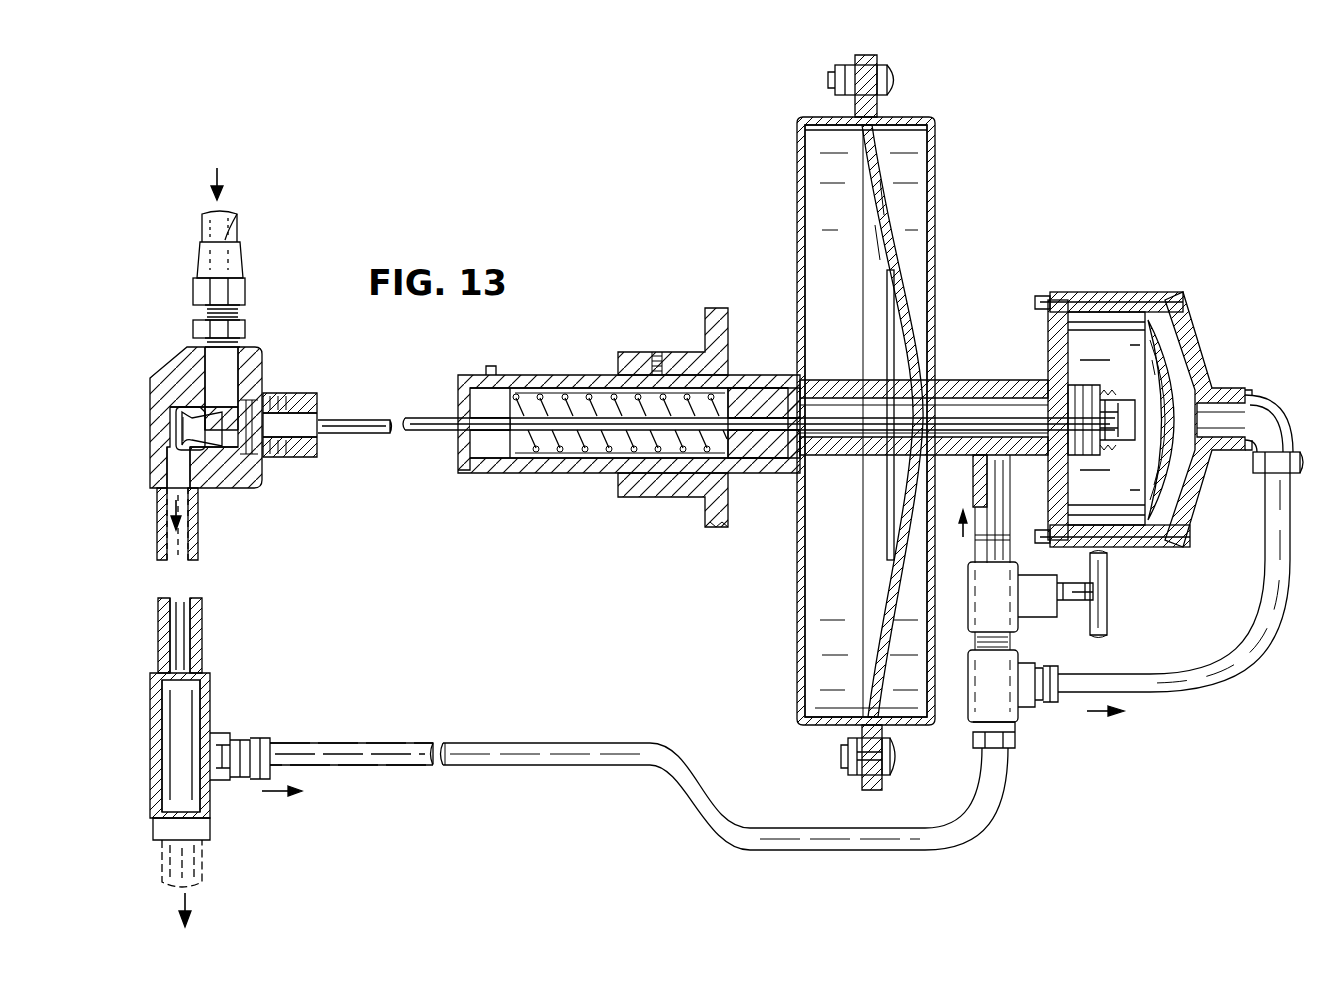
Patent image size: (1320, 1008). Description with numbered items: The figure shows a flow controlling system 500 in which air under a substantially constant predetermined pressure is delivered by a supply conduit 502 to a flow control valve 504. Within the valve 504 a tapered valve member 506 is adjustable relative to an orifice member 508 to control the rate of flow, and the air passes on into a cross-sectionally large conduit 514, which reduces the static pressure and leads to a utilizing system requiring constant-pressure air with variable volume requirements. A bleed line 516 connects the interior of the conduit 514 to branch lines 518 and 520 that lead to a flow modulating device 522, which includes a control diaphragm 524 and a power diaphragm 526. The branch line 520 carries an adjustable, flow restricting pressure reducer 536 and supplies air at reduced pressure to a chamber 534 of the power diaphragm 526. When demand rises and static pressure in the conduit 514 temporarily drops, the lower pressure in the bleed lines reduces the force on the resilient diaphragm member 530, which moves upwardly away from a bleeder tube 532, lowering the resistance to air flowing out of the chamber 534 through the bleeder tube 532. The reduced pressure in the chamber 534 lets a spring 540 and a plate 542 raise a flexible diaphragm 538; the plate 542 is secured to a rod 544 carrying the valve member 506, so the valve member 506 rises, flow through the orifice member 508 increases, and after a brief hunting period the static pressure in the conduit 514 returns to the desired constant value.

The flow controlling system 500 is at (810, 452).
The supply conduit 502 is at (237, 222).
The flow control valve 504 is at (276, 474).
The tapered valve member 506 is at (218, 457).
The orifice member 508 is at (185, 410).
The cross-sectionally large conduit 514 is at (203, 876).
The bleed line 516 is at (415, 768).
The branch line 518 is at (1200, 673).
The branch line 520 is at (1010, 640).
The flow modulating device 522 is at (792, 309).
The control diaphragm 524 is at (1192, 505).
The power diaphragm 526 is at (782, 268).
The resilient diaphragm member 530 is at (1165, 360).
The bleeder tube 532 is at (986, 379).
The chamber 534 is at (800, 637).
The pressure reducer 536 is at (1080, 591).
The flexible diaphragm 538 is at (912, 290).
The spring 540 is at (603, 452).
The plate 542 is at (890, 320).
The rod 544 is at (432, 432).